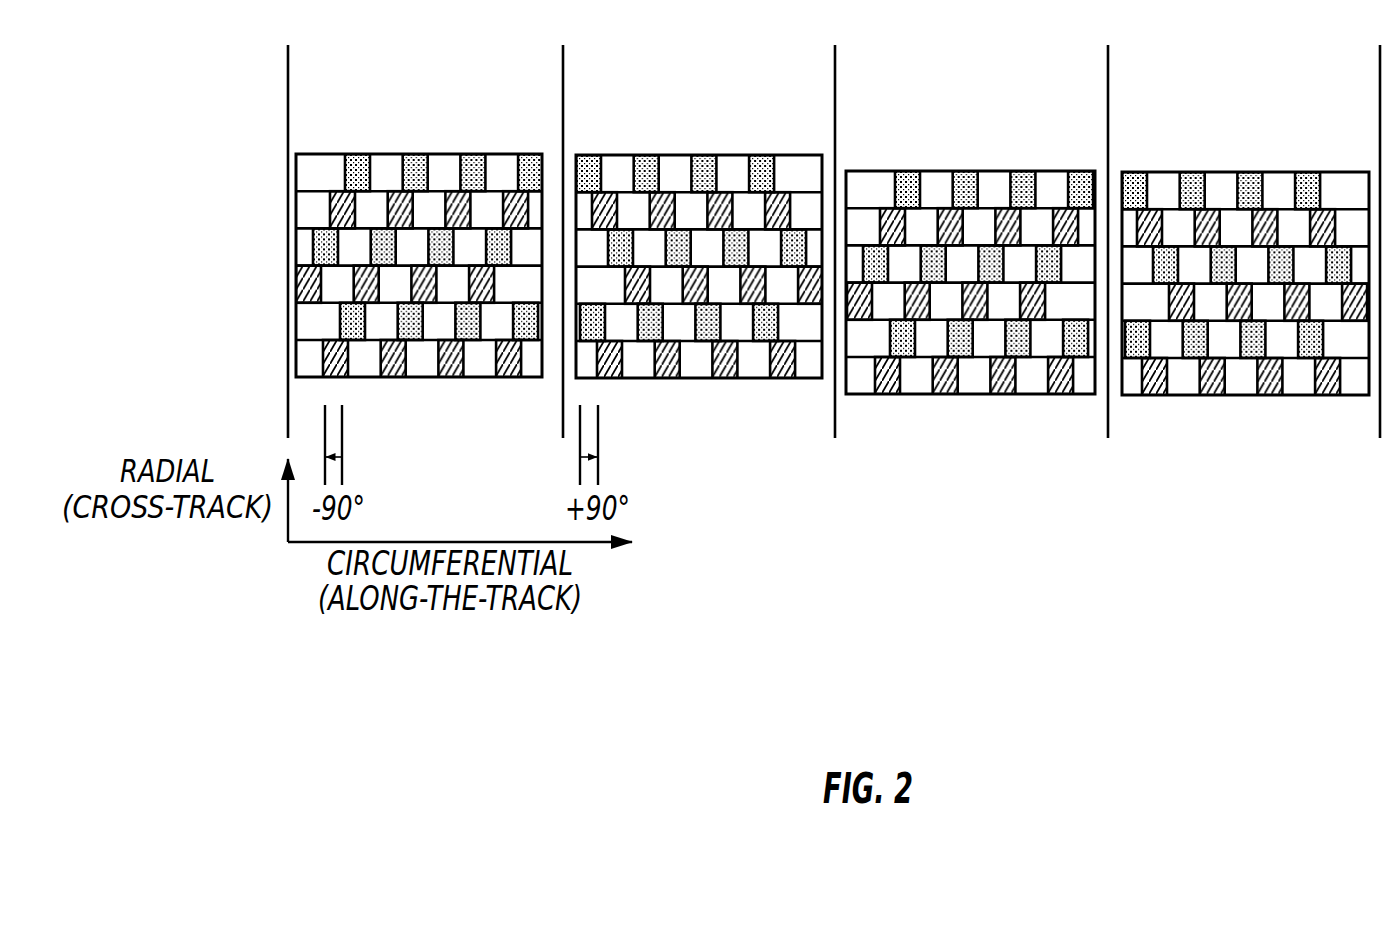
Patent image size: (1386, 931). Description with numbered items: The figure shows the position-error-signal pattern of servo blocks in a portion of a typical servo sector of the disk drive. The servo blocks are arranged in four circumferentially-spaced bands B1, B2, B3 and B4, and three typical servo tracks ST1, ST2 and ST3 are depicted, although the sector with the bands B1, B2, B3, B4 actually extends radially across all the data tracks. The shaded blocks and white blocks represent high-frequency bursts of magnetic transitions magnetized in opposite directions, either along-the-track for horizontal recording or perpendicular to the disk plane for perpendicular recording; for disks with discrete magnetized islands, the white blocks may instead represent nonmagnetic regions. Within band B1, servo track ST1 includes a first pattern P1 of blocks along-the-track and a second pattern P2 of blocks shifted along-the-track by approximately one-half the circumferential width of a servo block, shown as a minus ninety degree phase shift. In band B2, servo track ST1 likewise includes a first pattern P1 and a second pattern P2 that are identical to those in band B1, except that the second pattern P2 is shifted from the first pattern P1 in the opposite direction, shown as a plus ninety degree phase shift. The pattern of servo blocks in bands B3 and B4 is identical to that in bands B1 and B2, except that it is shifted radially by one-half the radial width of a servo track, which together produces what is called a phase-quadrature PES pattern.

The first circumferentially-spaced band B1 is at (297, 118).
The second circumferentially-spaced band B2 is at (577, 118).
The third circumferentially-spaced band B3 is at (1097, 135).
The fourth circumferentially-spaced band B4 is at (1370, 135).
The first servo track ST1 is at (178, 305).
The second servo track ST2 is at (178, 229).
The third servo track ST3 is at (178, 155).
The first pattern of blocks P1 is at (250, 305).
The second pattern of blocks P2 is at (250, 342).